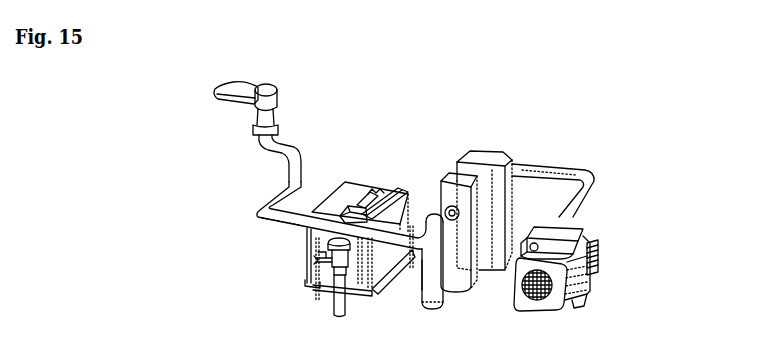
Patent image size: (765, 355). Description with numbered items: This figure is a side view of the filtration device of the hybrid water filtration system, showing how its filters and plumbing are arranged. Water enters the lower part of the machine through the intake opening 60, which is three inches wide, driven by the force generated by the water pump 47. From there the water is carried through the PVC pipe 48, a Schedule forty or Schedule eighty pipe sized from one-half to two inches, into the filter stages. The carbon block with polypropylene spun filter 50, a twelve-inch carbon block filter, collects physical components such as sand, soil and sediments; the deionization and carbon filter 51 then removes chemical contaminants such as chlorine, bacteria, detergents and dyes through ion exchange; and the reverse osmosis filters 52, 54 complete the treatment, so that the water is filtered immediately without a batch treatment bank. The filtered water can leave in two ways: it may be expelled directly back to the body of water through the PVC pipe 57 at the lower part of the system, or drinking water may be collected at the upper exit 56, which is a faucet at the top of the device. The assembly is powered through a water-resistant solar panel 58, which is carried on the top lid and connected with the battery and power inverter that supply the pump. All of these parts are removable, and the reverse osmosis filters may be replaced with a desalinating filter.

The water pump 47 is at (577, 283).
The PVC pipe 48 is at (260, 221).
The carbon block with polypropylene spun filter 50 is at (507, 165).
The deionization and carbon filter 51 is at (447, 175).
The reverse osmosis filter 52 is at (428, 296).
The reverse osmosis filter 54 is at (398, 299).
The upper exit 56 is at (266, 117).
The PVC pipe 57 is at (338, 313).
The solar panel 58 is at (358, 186).
The intake opening 60 is at (599, 258).